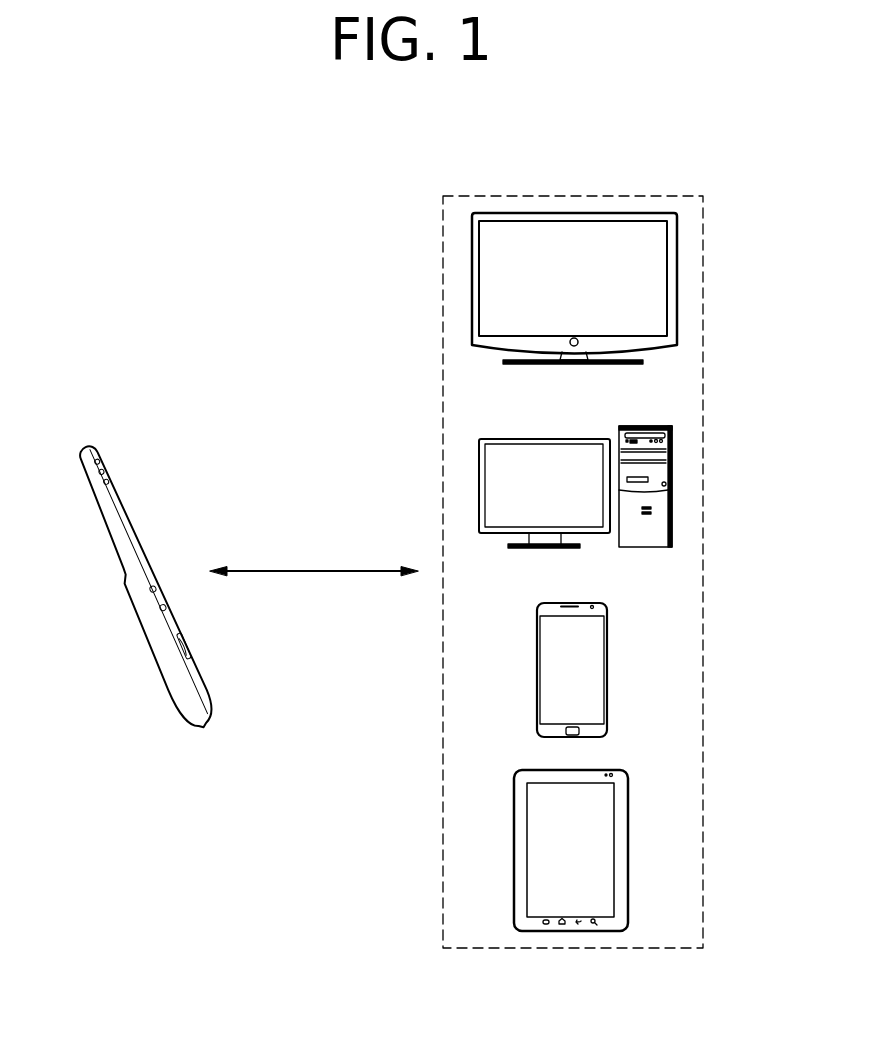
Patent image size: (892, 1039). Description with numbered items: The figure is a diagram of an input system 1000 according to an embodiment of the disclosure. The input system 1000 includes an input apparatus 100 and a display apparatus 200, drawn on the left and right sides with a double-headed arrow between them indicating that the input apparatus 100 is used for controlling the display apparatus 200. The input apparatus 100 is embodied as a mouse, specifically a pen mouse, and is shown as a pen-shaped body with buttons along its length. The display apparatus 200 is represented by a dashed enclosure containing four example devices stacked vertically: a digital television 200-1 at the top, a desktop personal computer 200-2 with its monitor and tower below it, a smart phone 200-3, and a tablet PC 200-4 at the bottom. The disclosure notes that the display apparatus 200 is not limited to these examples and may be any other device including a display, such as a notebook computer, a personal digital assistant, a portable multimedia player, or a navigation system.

The input system 1000 is at (328, 166).
The input apparatus 100 is at (82, 447).
The display apparatus 200 is at (703, 208).
The digital television 200-1 is at (677, 280).
The desktop personal computer 200-2 is at (672, 483).
The smart phone 200-3 is at (604, 653).
The tablet PC 200-4 is at (624, 847).